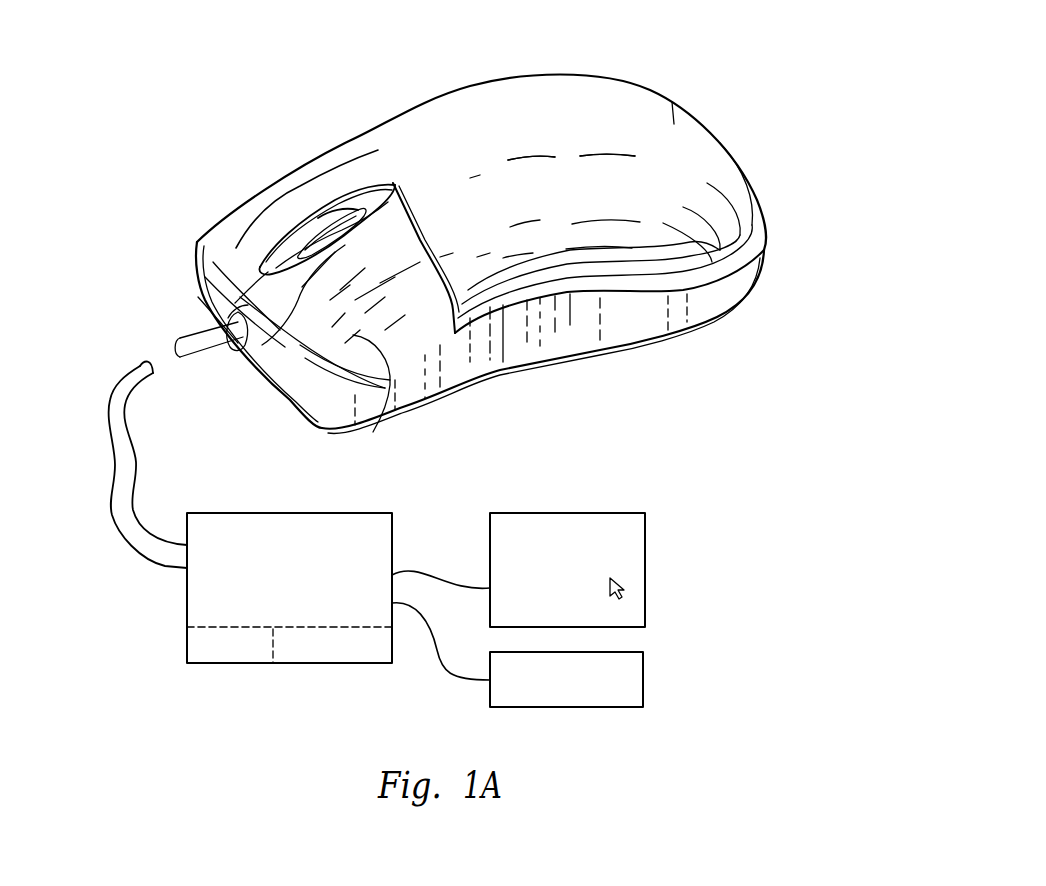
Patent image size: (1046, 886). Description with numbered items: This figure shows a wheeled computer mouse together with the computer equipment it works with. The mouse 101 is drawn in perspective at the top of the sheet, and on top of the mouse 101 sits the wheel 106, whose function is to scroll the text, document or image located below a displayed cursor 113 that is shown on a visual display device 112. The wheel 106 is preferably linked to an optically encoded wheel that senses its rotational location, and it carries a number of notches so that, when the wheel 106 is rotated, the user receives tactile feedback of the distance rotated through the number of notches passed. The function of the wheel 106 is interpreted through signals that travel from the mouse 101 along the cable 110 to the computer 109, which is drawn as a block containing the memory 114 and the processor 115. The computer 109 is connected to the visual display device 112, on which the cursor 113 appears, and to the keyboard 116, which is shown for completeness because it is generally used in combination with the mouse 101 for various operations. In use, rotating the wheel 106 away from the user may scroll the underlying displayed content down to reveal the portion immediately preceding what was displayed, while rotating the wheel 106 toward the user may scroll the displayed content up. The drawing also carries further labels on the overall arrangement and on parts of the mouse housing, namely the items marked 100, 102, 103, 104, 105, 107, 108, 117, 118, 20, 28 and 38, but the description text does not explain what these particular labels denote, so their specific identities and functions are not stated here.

The computer system 100 is at (95, 648).
The mouse 101 is at (422, 98).
The base of mouse housing 102 is at (764, 252).
The lower housing portion 103 is at (462, 363).
The detail region of housing 104 is at (370, 413).
The wheel housing opening 105 is at (303, 190).
The wheel 106 is at (303, 198).
The button surface 107 is at (378, 245).
The scroll wheel 108 is at (317, 214).
The computer 109 is at (200, 593).
The cable 110 is at (112, 390).
The visual display device 112 is at (619, 528).
The displayed cursor 113 is at (625, 592).
The memory 114 is at (187, 662).
The processor 115 is at (343, 662).
The keyboard 116 is at (643, 672).
The rear end of mouse 117 is at (726, 121).
The top surface of mouse 118 is at (560, 103).
The mouse button 20 is at (240, 252).
The front face of mouse 28 is at (200, 290).
The housing portion 38 is at (247, 200).